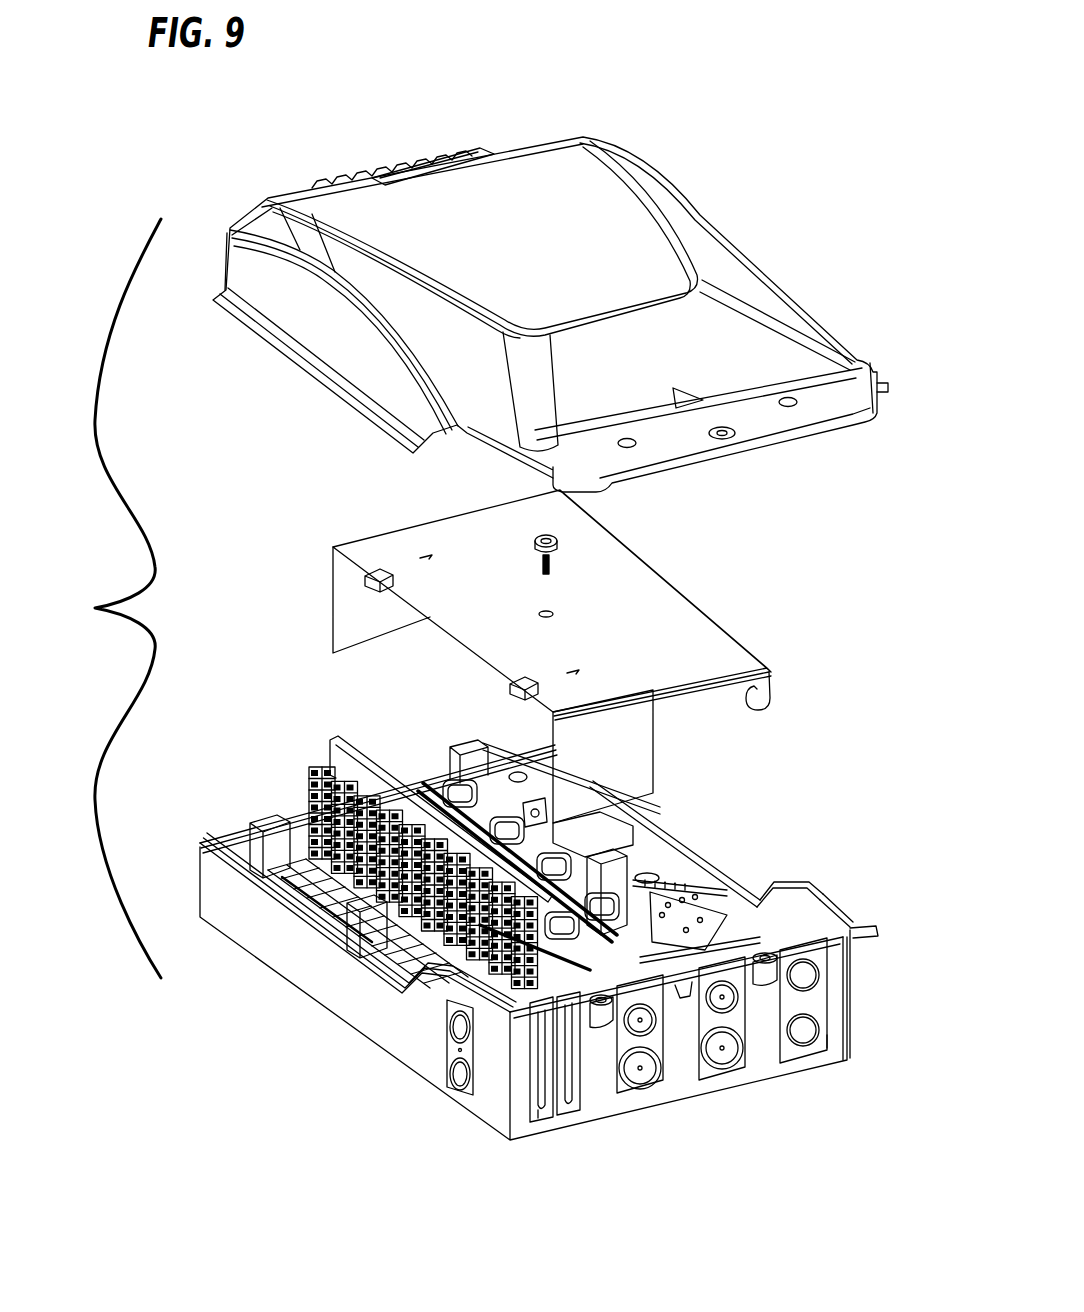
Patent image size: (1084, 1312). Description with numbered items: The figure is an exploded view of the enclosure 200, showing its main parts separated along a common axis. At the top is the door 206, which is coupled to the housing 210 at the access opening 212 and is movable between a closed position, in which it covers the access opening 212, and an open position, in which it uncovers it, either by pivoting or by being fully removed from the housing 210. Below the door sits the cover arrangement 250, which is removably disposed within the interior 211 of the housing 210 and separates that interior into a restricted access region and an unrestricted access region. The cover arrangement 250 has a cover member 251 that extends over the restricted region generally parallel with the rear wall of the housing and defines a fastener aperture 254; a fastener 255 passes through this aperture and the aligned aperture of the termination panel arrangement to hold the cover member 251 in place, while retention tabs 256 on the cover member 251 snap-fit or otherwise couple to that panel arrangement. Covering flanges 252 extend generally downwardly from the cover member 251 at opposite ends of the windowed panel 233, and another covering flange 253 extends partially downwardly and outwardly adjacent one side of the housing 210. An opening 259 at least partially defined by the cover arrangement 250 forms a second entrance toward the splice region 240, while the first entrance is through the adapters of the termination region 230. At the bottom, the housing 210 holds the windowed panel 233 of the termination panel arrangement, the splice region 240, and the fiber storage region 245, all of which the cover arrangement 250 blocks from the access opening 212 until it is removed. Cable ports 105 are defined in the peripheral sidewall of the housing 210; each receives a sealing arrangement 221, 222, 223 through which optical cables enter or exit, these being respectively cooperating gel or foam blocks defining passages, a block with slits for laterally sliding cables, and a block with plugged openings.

The enclosure 200 is at (103, 598).
The door 206 is at (757, 250).
The cover arrangement 250 is at (602, 635).
The cover member 251 is at (626, 639).
The covering flanges 252 is at (623, 767).
The covering flange 253 is at (755, 683).
The fastener aperture 254 is at (548, 613).
The fastener 255 is at (560, 543).
The retention tabs 256 is at (380, 567).
The opening 259 is at (687, 690).
The housing 210 is at (564, 975).
The interior 211 is at (240, 851).
The access opening 212 is at (817, 890).
The sealing arrangement 221 is at (787, 1040).
The sealing arrangement 222 is at (573, 1093).
The sealing arrangement 223 is at (707, 1063).
The termination region 230 is at (324, 756).
The windowed panel 233 is at (343, 877).
The splice region 240 is at (697, 847).
The fiber storage region 245 is at (443, 783).
The cable port 105 is at (823, 1043).